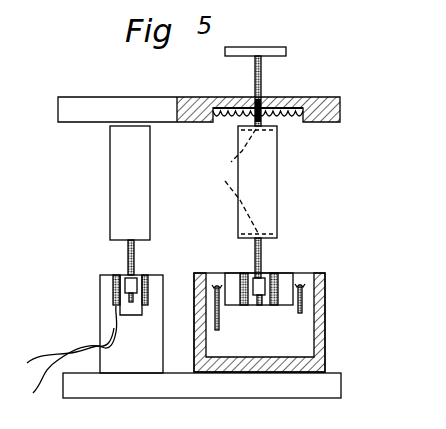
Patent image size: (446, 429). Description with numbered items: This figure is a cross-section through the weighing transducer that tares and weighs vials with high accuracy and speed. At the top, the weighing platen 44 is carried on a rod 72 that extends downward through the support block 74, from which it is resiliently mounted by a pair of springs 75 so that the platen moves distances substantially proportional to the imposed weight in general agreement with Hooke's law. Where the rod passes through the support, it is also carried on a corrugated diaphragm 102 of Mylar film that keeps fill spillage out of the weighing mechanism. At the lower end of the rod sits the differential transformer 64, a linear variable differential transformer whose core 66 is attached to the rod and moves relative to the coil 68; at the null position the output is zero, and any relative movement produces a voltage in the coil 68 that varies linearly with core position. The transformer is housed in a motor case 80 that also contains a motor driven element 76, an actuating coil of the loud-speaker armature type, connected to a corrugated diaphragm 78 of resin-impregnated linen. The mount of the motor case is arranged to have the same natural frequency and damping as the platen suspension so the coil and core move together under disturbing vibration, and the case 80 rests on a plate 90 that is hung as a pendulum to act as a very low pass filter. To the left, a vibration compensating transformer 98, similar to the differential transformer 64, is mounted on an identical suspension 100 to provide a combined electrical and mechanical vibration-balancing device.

The weighing platen 44 is at (286, 51).
The corrugated diaphragm 102 is at (282, 113).
The rod 72 is at (268, 212).
The support block 74 is at (272, 177).
The springs 75 is at (229, 181).
The differential transformer 64 is at (263, 258).
The motor case 80 is at (325, 347).
The coil 68 is at (272, 306).
The core 66 is at (259, 306).
The motor driven element 76 is at (217, 313).
The corrugated diaphragm 78 is at (310, 288).
The plate 90 is at (333, 388).
The suspension 100 is at (108, 198).
The vibration compensating transformer 98 is at (108, 290).